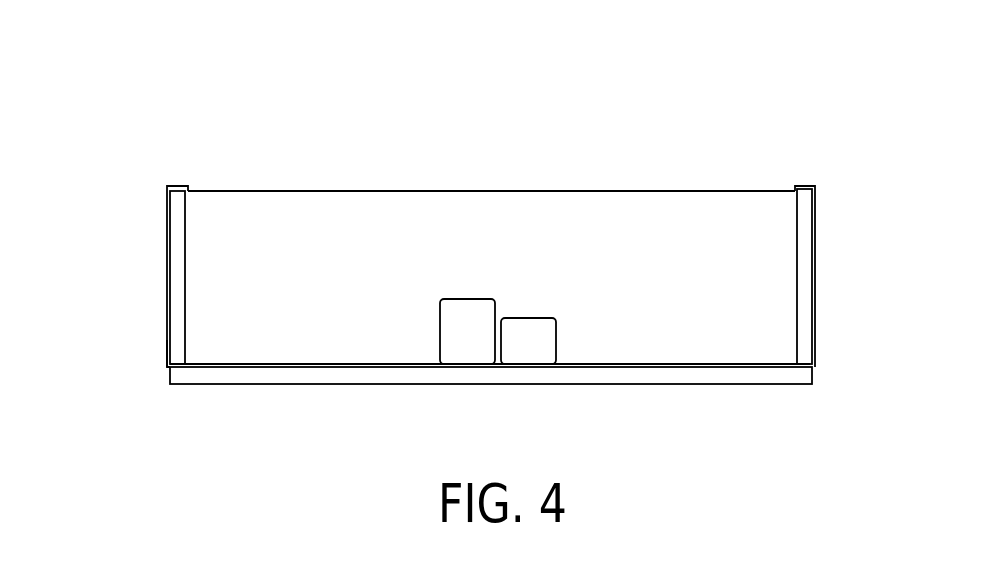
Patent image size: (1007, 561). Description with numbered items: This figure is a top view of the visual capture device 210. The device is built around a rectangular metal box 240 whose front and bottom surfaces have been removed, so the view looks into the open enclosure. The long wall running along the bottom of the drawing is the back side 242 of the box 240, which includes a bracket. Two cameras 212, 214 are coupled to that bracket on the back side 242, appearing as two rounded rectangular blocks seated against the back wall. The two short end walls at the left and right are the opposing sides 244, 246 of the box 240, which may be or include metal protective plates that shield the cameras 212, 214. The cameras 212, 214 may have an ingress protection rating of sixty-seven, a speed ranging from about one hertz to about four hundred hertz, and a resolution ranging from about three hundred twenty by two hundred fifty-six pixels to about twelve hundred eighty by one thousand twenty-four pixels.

The visual capture device 210 is at (278, 124).
The camera 212 is at (467, 348).
The camera 214 is at (521, 358).
The rectangular metal box 240 is at (182, 267).
The back side 242 is at (677, 377).
The opposing side 244 is at (170, 352).
The opposing side 246 is at (814, 345).